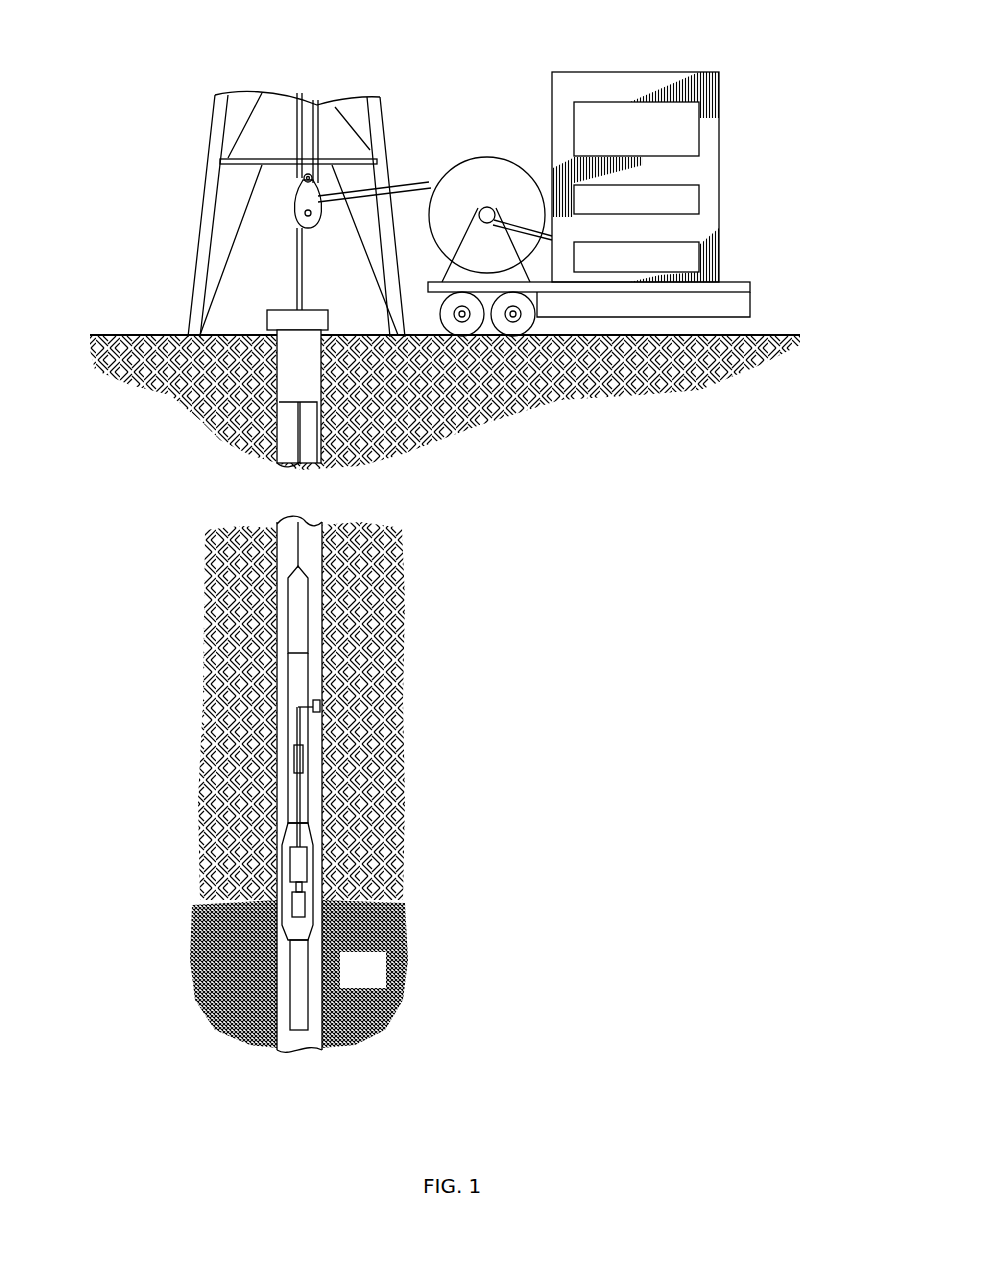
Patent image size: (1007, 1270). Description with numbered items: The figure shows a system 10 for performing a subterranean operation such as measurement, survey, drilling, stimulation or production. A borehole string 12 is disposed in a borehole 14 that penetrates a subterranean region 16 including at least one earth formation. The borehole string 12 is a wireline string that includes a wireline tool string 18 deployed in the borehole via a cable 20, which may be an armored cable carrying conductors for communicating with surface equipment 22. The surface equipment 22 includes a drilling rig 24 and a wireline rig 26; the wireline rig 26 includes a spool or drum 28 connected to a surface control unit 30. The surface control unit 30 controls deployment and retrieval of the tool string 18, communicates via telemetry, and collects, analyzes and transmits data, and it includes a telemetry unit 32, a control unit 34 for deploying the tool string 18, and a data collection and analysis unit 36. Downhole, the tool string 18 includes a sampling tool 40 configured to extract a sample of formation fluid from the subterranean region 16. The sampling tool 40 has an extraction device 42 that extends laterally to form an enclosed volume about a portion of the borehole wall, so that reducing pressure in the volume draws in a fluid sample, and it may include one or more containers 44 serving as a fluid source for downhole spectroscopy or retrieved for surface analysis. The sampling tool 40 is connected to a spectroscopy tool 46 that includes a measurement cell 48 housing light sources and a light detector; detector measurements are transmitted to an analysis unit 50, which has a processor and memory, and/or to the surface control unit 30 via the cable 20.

The system 10 is at (213, 36).
The borehole string 12 is at (315, 553).
The borehole 14 is at (279, 996).
The subterranean region 16 is at (377, 982).
The wireline tool string 18 is at (308, 607).
The cable 20 is at (277, 548).
The surface equipment 22 is at (440, 118).
The drilling rig 24 is at (212, 160).
The wireline rig 26 is at (753, 290).
The spool or drum 28 is at (502, 172).
The surface control unit 30 is at (675, 148).
The telemetry unit 32 is at (682, 260).
The control unit 34 is at (682, 198).
The data collection and analysis unit 36 is at (682, 135).
The sampling tool 40 is at (310, 680).
The extraction device 42 is at (320, 709).
The container 44 is at (295, 767).
The spectroscopy tool 46 is at (318, 870).
The measurement cell 48 is at (307, 865).
The analysis unit 50 is at (292, 900).